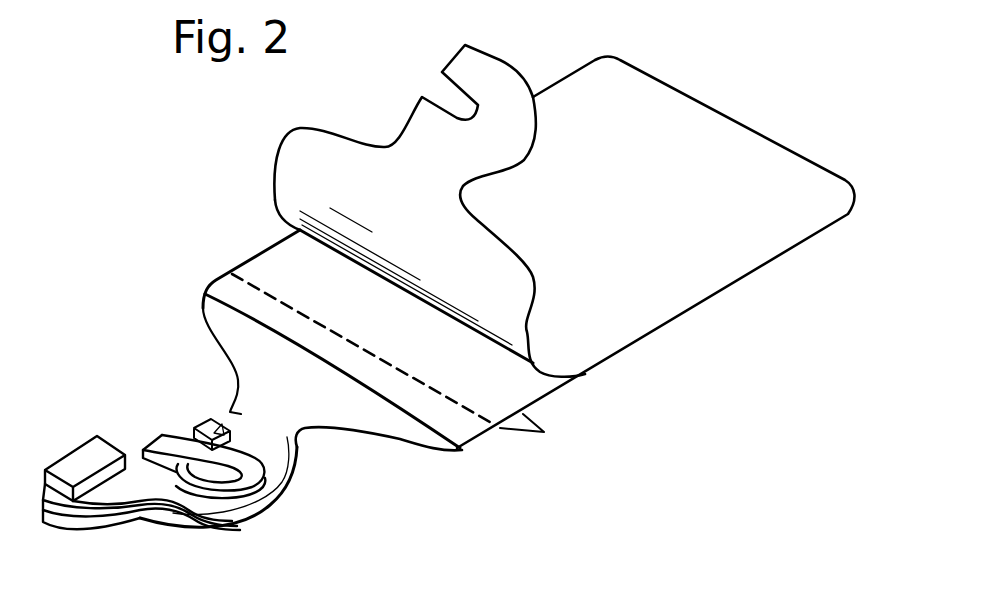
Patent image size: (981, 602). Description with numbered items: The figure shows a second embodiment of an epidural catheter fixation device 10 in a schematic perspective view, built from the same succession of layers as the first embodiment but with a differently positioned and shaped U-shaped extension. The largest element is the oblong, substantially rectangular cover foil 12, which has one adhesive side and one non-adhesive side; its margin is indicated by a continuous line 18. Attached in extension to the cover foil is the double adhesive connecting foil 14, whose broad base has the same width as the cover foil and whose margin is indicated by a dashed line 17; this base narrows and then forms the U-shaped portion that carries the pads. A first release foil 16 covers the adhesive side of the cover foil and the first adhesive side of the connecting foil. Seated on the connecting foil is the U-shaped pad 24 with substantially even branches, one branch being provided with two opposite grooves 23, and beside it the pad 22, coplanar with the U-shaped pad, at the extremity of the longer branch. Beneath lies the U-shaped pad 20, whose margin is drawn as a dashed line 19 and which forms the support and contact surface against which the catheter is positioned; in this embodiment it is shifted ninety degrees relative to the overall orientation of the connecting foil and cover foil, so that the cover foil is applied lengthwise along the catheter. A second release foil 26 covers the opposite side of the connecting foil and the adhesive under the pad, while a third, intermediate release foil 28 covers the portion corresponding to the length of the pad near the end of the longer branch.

The epidural catheter fixation device 10 is at (743, 110).
The cover foil 12 is at (541, 387).
The double adhesive connecting foil 14 is at (375, 418).
The first release foil 16 is at (627, 84).
The dashed line 17 is at (271, 293).
The continuous line 18 is at (232, 298).
The dashed line 19 is at (287, 422).
The U-shaped pad 20 is at (140, 489).
The pad 22 is at (78, 450).
The grooves 23 is at (228, 405).
The U-shaped pad 24 is at (158, 443).
The second release foil 26 is at (99, 527).
The third release foil 28 is at (60, 520).